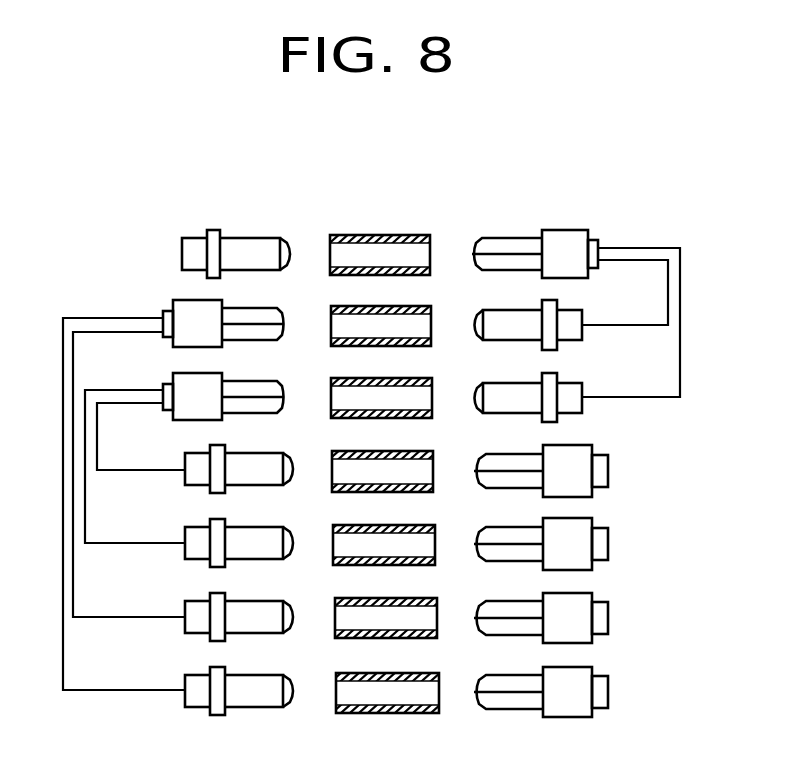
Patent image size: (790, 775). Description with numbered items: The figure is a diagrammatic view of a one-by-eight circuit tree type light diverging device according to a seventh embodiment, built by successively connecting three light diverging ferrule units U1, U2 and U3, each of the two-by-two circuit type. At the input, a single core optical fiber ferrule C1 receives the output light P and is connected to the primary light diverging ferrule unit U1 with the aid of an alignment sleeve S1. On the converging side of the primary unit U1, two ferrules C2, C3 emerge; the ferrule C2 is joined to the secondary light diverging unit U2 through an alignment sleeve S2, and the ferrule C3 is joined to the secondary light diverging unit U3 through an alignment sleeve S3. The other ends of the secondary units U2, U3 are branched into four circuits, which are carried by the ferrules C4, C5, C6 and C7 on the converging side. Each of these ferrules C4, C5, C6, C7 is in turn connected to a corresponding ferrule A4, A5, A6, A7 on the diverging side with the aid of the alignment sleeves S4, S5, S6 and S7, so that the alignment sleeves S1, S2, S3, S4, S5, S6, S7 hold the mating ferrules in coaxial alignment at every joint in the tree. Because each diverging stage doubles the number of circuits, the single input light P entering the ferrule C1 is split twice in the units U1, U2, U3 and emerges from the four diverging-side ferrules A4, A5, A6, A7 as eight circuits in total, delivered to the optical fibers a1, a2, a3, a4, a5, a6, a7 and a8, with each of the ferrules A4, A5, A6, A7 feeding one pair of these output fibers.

The output light P is at (182, 254).
The single core optical fiber ferrule C1 is at (236, 254).
The secondary light diverging unit U2 is at (173, 495).
The secondary light diverging unit U3 is at (184, 458).
The ferrule C4 is at (239, 469).
The ferrule C5 is at (239, 543).
The ferrule C6 is at (239, 617).
The ferrule C7 is at (239, 691).
The alignment sleeve S1 is at (380, 241).
The alignment sleeve S2 is at (381, 312).
The alignment sleeve S3 is at (381, 384).
The alignment sleeve S4 is at (382, 458).
The alignment sleeve S5 is at (384, 531).
The alignment sleeve S6 is at (386, 604).
The alignment sleeve S7 is at (387, 679).
The primary light diverging ferrule unit U1 is at (576, 313).
The ferrule C2 is at (529, 325).
The ferrule C3 is at (529, 397).
The ferrule A4 is at (541, 471).
The ferrule A5 is at (541, 544).
The ferrule A6 is at (541, 618).
The ferrule A7 is at (541, 692).
The optical fiber a1 is at (608, 464).
The optical fiber a2 is at (608, 476).
The optical fiber a3 is at (608, 537).
The optical fiber a4 is at (608, 549).
The optical fiber a5 is at (608, 611).
The optical fiber a6 is at (608, 623).
The optical fiber a7 is at (608, 685).
The optical fiber a8 is at (608, 697).